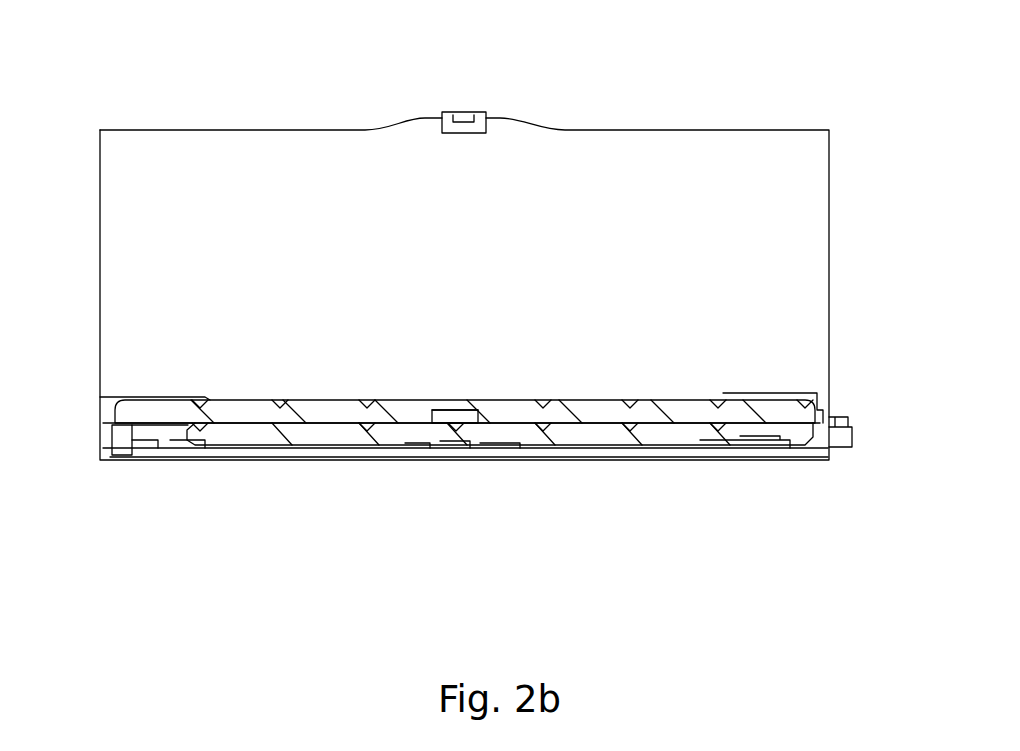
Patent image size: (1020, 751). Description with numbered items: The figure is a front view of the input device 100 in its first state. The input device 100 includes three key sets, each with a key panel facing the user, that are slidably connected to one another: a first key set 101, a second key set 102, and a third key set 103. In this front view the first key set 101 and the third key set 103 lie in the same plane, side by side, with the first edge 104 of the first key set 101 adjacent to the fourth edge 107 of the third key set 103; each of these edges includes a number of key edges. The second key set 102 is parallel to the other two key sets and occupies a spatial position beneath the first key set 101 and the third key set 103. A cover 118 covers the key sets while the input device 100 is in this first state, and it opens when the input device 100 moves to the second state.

The input device 100 is at (470, 52).
The first key set 101 is at (235, 413).
The second key set 102 is at (562, 440).
The third key set 103 is at (753, 408).
The first edge 104 is at (457, 412).
The fourth edge 107 is at (458, 422).
The cover 118 is at (633, 178).